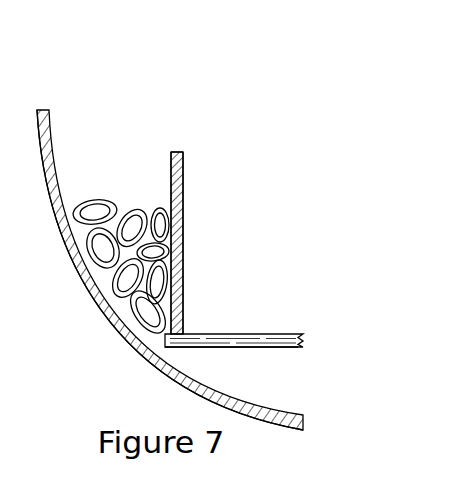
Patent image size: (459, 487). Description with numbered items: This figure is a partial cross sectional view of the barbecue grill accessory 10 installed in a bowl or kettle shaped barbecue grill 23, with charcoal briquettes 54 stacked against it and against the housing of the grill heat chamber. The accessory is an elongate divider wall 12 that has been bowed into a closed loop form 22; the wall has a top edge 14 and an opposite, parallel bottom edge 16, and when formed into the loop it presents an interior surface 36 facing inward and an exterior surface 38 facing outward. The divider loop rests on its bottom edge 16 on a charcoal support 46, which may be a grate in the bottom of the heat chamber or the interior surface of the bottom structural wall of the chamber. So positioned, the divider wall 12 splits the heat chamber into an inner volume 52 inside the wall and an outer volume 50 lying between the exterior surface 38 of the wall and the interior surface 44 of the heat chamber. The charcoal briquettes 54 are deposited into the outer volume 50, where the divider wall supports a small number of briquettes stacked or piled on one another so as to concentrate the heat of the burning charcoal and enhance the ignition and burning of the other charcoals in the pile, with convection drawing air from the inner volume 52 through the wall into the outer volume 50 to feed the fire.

The barbecue grill accessory 10 is at (238, 130).
The divider wall 12 is at (183, 180).
The top edge 14 is at (176, 152).
The bottom edge 16 is at (184, 332).
The loop form 22 is at (193, 150).
The barbecue grill 23 is at (118, 328).
The interior surface 36 is at (183, 245).
The exterior surface 38 is at (170, 181).
The interior surface of the heat chamber 44 is at (58, 170).
The charcoal support 46 is at (232, 348).
The outer volume 50 is at (92, 113).
The inner volume 52 is at (232, 207).
The charcoal briquettes 54 is at (103, 250).